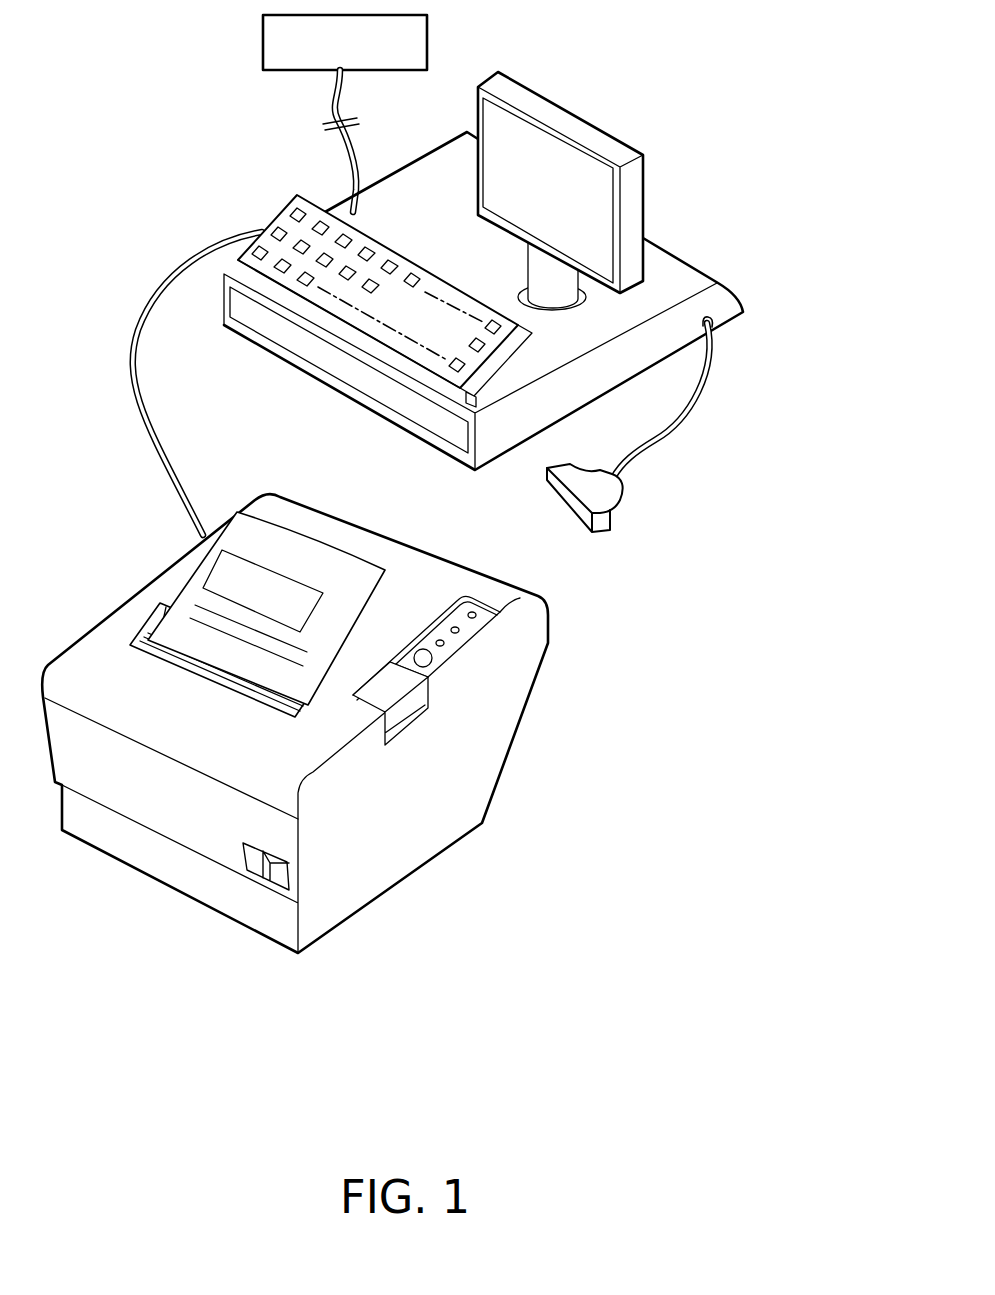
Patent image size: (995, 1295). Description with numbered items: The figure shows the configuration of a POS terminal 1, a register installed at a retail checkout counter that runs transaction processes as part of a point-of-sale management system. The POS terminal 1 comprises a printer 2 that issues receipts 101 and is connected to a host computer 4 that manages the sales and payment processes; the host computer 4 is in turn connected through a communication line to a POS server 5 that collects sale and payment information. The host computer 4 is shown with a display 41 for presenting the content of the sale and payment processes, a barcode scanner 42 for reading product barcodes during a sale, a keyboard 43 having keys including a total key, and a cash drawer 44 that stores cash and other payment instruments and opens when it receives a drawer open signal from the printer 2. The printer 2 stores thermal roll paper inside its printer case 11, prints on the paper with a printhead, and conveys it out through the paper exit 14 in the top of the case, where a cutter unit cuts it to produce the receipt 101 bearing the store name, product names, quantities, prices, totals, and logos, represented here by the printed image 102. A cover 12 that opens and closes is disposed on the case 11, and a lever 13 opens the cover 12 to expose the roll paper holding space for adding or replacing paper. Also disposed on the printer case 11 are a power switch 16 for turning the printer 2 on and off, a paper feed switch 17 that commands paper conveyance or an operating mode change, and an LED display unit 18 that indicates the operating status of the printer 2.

The POS terminal 1 is at (607, 63).
The printer 2 is at (329, 726).
The host computer 4 is at (483, 302).
The POS server 5 is at (428, 42).
The printer case 11 is at (523, 658).
The cover 12 is at (261, 641).
The lever 13 is at (390, 692).
The paper exit 14 is at (173, 605).
The power switch 16 is at (260, 865).
The paper feed switch 17 is at (425, 658).
The LED display unit 18 is at (469, 724).
The display 41 is at (627, 141).
The barcode scanner 42 is at (620, 497).
The keyboard 43 is at (360, 322).
The cash drawer 44 is at (373, 388).
The receipt 101 is at (284, 584).
The printed image 102 is at (300, 602).